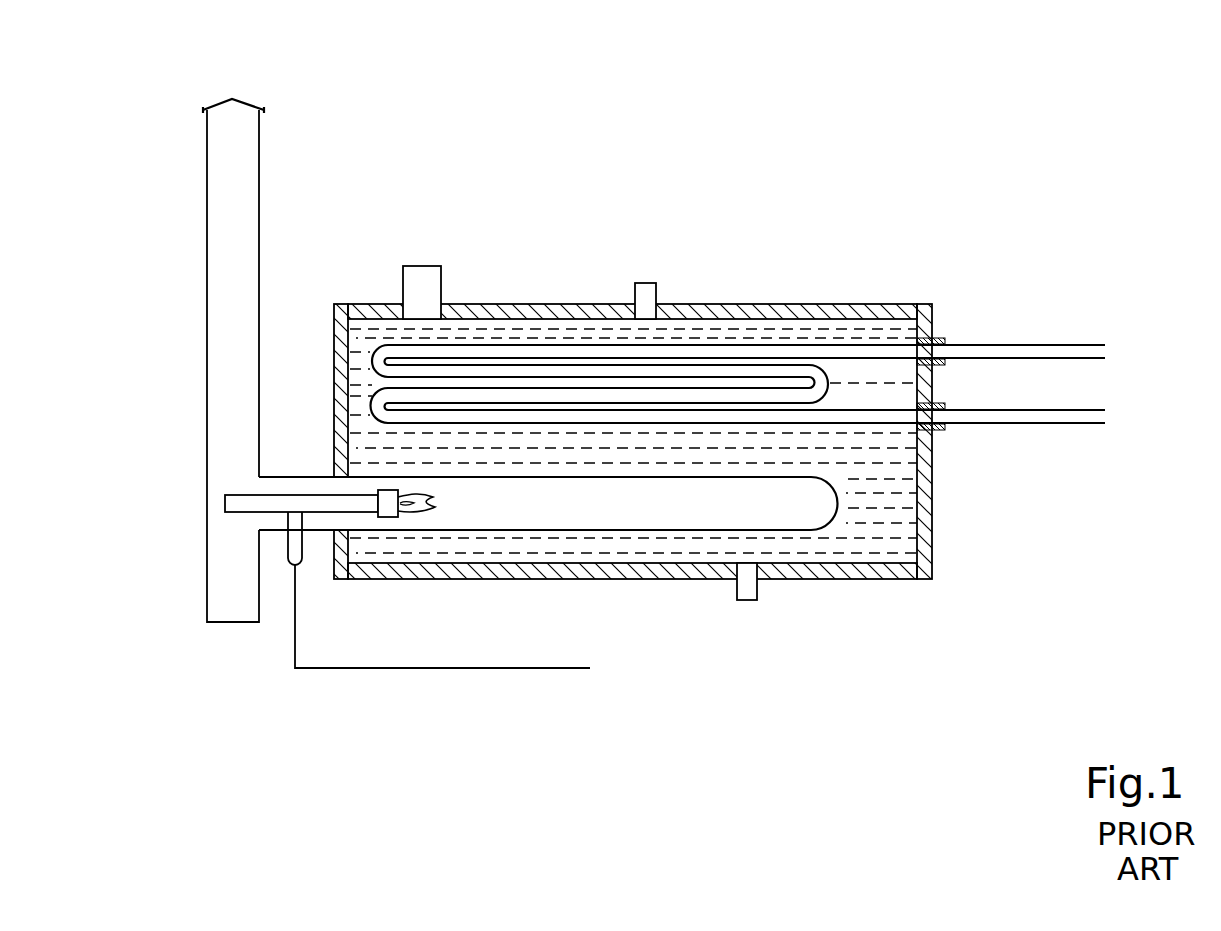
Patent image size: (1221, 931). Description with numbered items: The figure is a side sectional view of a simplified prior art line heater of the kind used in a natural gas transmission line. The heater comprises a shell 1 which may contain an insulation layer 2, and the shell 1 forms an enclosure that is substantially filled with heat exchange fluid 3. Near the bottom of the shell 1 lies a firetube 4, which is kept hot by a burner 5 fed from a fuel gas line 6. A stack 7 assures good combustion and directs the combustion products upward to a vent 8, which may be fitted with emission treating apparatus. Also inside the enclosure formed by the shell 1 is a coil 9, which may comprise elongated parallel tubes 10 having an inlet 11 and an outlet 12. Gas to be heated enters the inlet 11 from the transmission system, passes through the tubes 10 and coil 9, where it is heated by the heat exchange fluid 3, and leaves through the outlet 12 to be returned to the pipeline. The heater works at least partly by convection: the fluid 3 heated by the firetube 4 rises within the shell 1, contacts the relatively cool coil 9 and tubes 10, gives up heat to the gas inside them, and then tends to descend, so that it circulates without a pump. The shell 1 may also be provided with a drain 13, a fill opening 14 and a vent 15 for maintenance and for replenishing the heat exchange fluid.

The shell 1 is at (538, 312).
The insulation layer 2 is at (885, 305).
The heat exchange fluid 3 is at (713, 467).
The firetube 4 is at (713, 517).
The burner 5 is at (437, 506).
The fuel gas line 6 is at (295, 655).
The stack 7 is at (222, 364).
The vent 8 is at (235, 100).
The coil 9 is at (830, 385).
The elongated parallel tubes 10 is at (735, 342).
The inlet 11 is at (1030, 345).
The outlet 12 is at (1030, 423).
The drain 13 is at (757, 597).
The fill opening 14 is at (441, 274).
The vent 15 is at (657, 290).